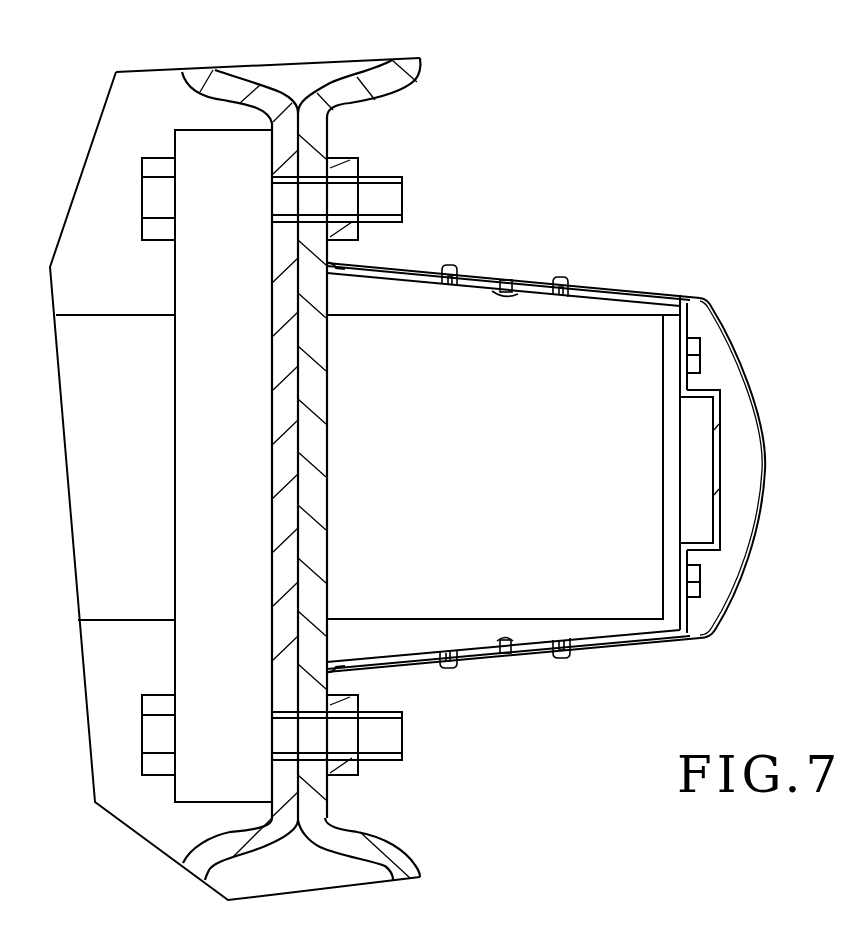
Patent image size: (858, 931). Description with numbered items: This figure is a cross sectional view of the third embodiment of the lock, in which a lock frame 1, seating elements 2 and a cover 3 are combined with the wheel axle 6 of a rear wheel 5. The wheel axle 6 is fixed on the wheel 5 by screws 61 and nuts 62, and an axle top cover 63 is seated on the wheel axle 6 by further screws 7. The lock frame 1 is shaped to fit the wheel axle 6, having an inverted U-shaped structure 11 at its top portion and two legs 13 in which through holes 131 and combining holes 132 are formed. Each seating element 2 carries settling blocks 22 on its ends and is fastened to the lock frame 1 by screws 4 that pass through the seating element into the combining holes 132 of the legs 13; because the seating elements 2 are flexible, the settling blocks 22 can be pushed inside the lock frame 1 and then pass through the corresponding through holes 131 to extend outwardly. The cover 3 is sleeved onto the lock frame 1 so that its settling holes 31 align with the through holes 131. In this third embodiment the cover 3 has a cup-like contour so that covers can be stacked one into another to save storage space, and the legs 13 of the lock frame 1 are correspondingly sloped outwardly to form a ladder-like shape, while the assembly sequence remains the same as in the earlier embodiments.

The lock frame 1 is at (683, 318).
The seating elements 2 is at (540, 290).
The cover 3 is at (740, 353).
The screws 4 is at (507, 286).
The rear wheel 5 is at (387, 83).
The wheel axle 6 is at (598, 527).
The screws 7 is at (697, 345).
The inverted U-shaped structure 11 is at (717, 410).
The legs 13 is at (638, 302).
The settling blocks 22 is at (452, 266).
The settling holes 31 is at (463, 662).
The screws 61 is at (392, 195).
The nuts 62 is at (351, 168).
The axle top cover 63 is at (698, 483).
The through holes 131 is at (432, 268).
The combining holes 132 is at (503, 280).